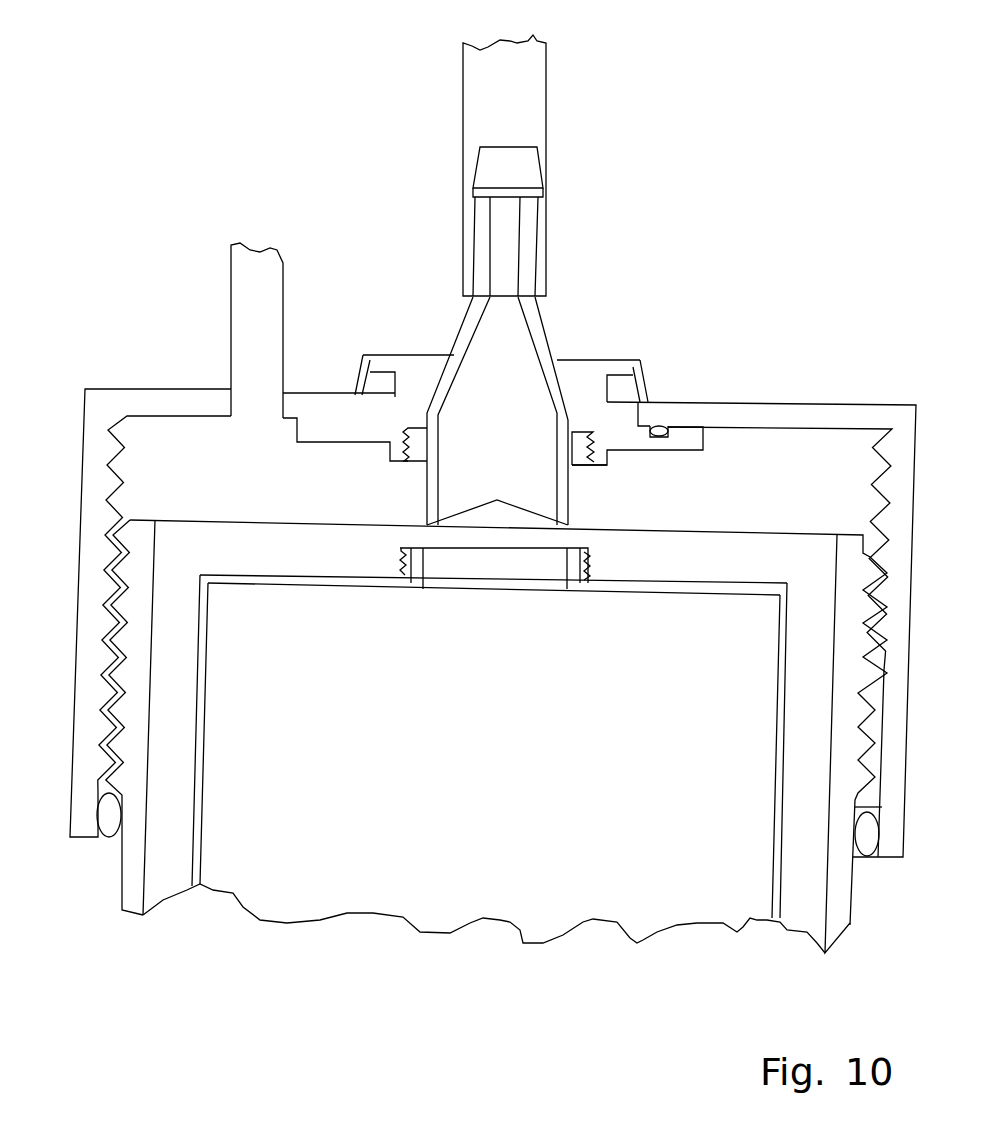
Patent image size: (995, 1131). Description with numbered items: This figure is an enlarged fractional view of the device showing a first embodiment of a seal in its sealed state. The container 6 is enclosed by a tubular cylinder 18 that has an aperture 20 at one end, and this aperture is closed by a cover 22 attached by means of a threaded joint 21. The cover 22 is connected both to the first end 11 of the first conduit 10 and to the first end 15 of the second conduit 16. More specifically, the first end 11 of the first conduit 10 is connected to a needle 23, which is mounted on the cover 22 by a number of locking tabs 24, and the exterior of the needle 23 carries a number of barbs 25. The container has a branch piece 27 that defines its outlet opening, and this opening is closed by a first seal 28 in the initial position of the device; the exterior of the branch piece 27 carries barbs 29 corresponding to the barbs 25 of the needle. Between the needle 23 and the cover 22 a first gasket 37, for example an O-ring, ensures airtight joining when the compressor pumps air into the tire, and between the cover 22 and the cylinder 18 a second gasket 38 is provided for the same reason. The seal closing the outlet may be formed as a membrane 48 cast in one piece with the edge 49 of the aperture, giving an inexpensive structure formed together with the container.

The container 6 is at (783, 716).
The first conduit 10 is at (523, 75).
The first end of the first conduit 11 is at (540, 232).
The first end of the second conduit 15 is at (258, 407).
The second conduit 16 is at (252, 267).
The tubular cylinder 18 is at (840, 884).
The aperture 20 is at (812, 557).
The threaded joint 21 is at (118, 597).
The cover 22 is at (143, 405).
The needle 23 is at (527, 375).
The locking tabs 24 is at (645, 387).
The barbs 25 is at (405, 440).
The branch piece 27 is at (573, 452).
The first seal 28 is at (473, 598).
The barbs 29 is at (397, 575).
The first gasket 37 is at (662, 429).
The second gasket 38 is at (865, 838).
The membrane 48 is at (528, 595).
The edge of the aperture 49 is at (565, 562).